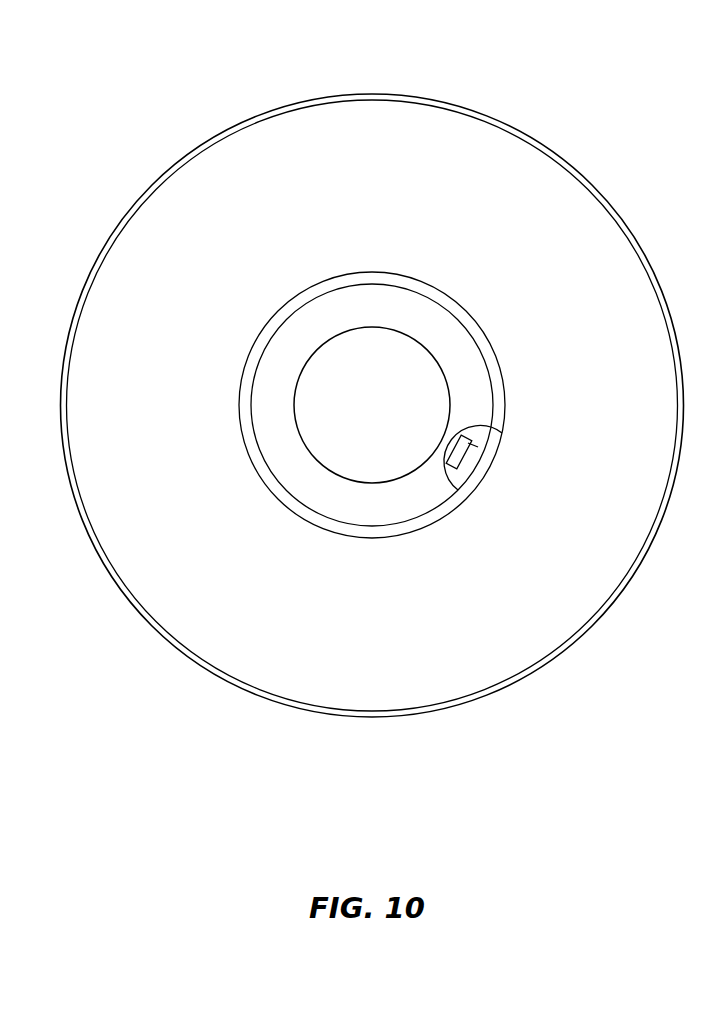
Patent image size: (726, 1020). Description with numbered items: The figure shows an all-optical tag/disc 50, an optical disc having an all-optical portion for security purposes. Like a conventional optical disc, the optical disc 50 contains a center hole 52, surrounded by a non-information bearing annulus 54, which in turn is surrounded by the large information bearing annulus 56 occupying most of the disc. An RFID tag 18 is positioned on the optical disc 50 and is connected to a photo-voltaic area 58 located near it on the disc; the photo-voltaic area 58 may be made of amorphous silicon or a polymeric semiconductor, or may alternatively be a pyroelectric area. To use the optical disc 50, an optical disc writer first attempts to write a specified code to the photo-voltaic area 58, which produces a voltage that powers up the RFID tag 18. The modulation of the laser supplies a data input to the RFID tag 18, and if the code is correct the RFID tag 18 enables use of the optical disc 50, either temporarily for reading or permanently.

The all-optical tag/disc 50 is at (636, 132).
The information bearing annulus 56 is at (323, 148).
The non-information bearing annulus 54 is at (455, 368).
The center hole 52 is at (389, 402).
The photo-voltaic area 58 is at (492, 448).
The RFID tag 18 is at (455, 437).